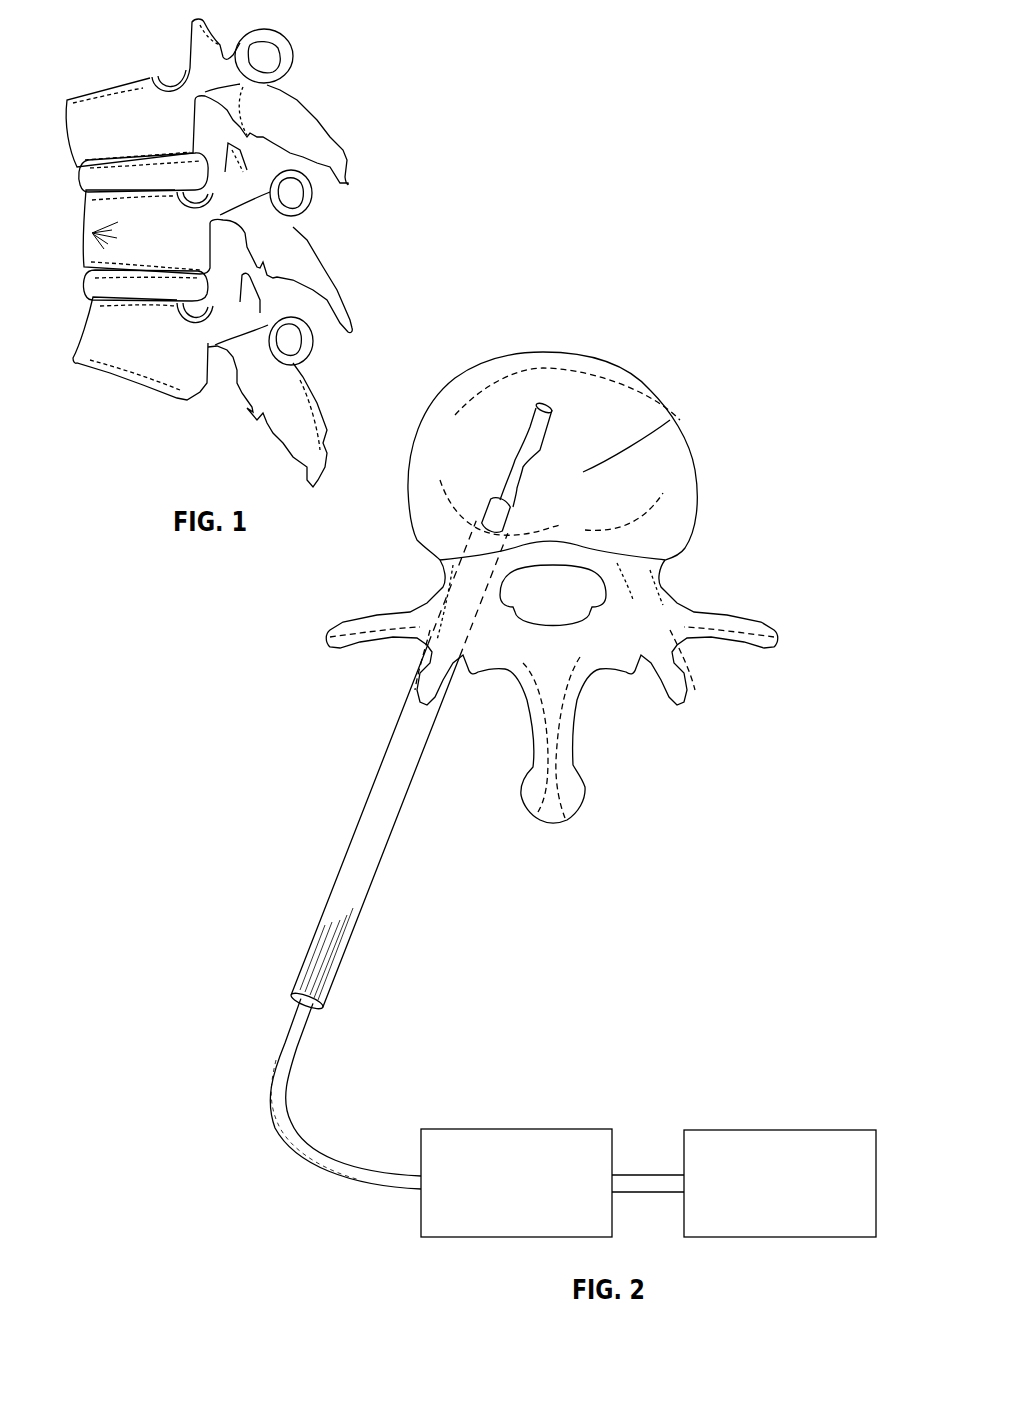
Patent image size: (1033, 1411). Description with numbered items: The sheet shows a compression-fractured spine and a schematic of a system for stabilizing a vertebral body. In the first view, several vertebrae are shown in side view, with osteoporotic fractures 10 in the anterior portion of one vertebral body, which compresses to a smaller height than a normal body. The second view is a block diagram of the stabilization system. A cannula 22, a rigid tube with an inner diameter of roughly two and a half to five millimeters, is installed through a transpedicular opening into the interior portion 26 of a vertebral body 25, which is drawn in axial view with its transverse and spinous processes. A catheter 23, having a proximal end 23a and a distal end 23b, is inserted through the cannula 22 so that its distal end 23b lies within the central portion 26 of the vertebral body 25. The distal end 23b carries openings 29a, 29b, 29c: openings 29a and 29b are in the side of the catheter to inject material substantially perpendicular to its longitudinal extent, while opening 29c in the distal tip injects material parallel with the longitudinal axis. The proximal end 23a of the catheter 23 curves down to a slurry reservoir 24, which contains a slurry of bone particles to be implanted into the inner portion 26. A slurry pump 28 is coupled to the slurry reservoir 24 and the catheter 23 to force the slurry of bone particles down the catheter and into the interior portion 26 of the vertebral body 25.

In FIG. 1, the fractures 10 is at (92, 233).
In FIG. 2, the cannula 22 is at (375, 780).
In FIG. 2, the catheter 23 is at (288, 1021).
In FIG. 2, the proximal end 23a is at (322, 1150).
In FIG. 2, the distal end 23b is at (500, 495).
In FIG. 2, the slurry reservoir 24 is at (517, 1128).
In FIG. 2, the vertebral body 25 is at (551, 352).
In FIG. 2, the interior portion 26 is at (670, 420).
In FIG. 2, the slurry pump 28 is at (782, 1128).
In FIG. 2, the opening 29a is at (523, 477).
In FIG. 2, the opening 29b is at (526, 443).
In FIG. 2, the opening 29c is at (551, 409).